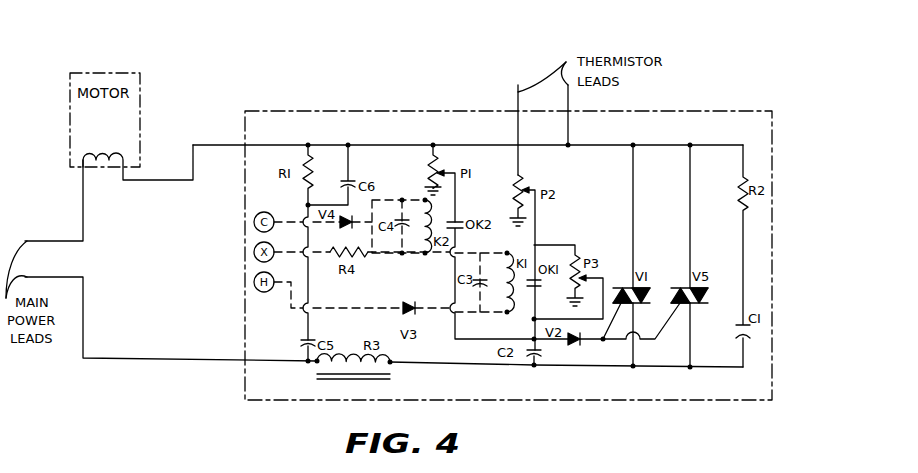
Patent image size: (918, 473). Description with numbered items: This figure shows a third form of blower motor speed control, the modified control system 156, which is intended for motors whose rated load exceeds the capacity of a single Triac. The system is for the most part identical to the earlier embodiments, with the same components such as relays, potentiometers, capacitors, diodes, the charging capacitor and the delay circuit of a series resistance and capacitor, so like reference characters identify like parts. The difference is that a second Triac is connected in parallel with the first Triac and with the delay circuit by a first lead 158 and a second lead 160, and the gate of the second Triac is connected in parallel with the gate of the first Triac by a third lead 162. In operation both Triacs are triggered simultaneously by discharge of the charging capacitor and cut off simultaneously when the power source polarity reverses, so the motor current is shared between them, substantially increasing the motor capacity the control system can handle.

The modified control system 156 is at (226, 72).
The lead 158 is at (690, 201).
The lead 160 is at (690, 349).
The third lead 162 is at (633, 344).